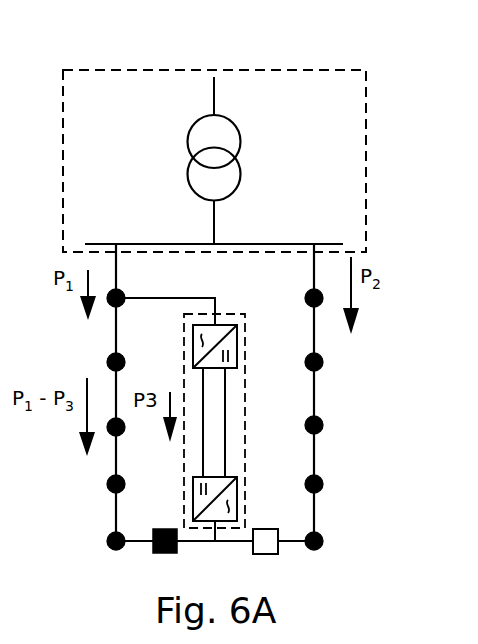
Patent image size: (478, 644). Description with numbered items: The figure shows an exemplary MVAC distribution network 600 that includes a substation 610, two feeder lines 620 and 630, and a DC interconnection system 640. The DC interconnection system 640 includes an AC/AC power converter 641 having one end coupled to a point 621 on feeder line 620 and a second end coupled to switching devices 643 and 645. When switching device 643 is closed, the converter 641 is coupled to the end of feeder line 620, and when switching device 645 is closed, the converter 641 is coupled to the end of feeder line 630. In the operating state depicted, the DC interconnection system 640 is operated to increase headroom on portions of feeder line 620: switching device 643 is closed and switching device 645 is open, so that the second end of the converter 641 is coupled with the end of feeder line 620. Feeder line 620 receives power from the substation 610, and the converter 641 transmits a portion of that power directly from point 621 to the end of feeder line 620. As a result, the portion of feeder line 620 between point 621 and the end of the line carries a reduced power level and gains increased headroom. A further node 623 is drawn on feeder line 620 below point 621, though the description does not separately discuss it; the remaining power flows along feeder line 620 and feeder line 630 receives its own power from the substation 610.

The MVAC distribution network 600 is at (392, 148).
The substation 610 is at (325, 70).
The feeder line 620 is at (116, 330).
The point on feeder line 621 is at (120, 298).
The second node 623 is at (120, 362).
The feeder line 630 is at (316, 383).
The DC interconnection system 640 is at (133, 545).
The AC/AC power converter 641 is at (224, 314).
The switching device 643 is at (165, 529).
The switching device 645 is at (266, 529).